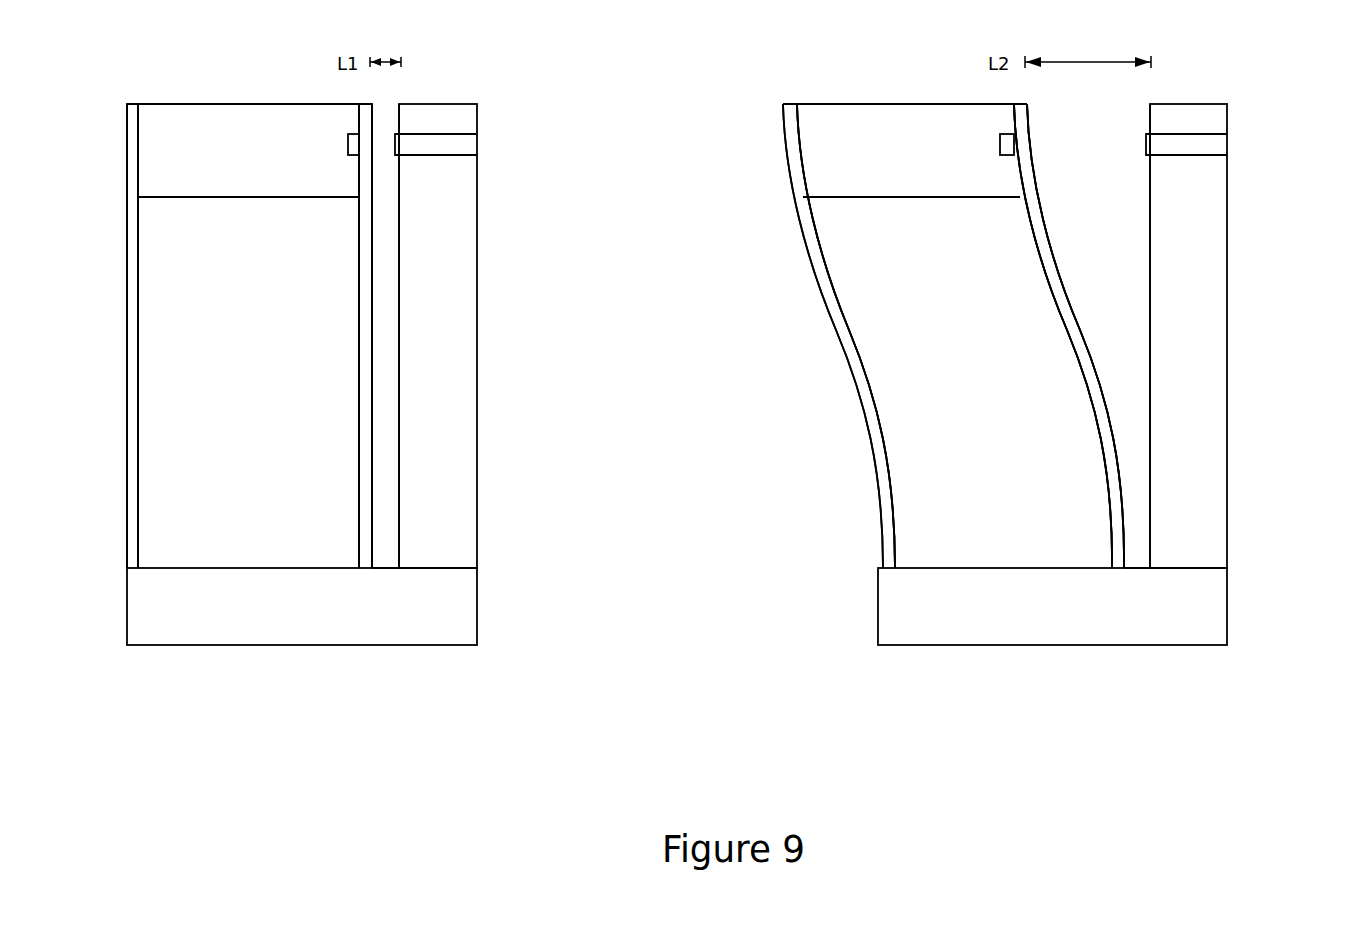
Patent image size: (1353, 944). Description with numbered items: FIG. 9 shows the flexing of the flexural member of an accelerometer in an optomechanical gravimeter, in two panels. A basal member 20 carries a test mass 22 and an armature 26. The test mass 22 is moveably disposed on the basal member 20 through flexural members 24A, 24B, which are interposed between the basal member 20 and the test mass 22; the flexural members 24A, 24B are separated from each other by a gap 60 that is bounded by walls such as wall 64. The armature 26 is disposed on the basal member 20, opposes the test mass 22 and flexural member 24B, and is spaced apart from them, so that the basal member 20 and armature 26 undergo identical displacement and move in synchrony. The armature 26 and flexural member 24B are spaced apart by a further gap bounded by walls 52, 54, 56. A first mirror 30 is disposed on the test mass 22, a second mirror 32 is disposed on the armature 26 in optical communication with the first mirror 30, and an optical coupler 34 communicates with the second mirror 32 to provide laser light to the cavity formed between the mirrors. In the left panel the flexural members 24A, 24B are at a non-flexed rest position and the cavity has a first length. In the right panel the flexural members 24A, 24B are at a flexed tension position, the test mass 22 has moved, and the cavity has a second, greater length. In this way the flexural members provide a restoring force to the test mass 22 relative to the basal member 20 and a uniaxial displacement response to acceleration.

The basal member 20 is at (270, 612).
The test mass 22 is at (207, 117).
The flexural member 24A is at (133, 238).
The flexural member 24B is at (366, 288).
The armature 26 is at (443, 117).
The first mirror 30 is at (355, 145).
The second mirror 32 is at (398, 143).
The optical coupler 34 is at (467, 147).
The wall 52 is at (373, 402).
The wall 54 is at (401, 480).
The wall 56 is at (387, 568).
The gap 60 is at (228, 535).
The wall 64 is at (138, 343).